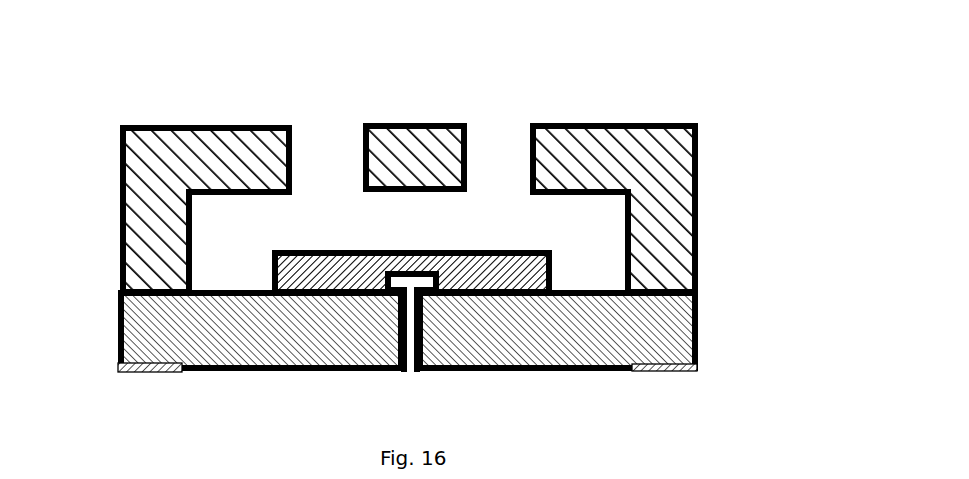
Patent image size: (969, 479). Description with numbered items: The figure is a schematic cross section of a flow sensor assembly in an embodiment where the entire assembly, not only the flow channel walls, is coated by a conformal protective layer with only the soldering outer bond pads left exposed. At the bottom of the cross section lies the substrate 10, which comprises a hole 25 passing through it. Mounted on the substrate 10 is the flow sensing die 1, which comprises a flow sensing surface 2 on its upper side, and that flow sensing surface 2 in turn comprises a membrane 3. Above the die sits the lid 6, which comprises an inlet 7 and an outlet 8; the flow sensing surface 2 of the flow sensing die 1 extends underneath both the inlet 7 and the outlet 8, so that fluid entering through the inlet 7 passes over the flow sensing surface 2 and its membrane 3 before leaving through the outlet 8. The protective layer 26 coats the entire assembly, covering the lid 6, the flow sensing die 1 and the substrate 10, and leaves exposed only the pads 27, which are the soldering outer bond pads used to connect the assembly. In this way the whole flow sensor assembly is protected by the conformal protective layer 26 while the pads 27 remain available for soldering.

The flow sensing die 1 is at (335, 273).
The flow sensing surface 2 is at (332, 250).
The membrane 3 is at (408, 250).
The lid 6 is at (150, 198).
The inlet 7 is at (322, 132).
The outlet 8 is at (495, 152).
The substrate 10 is at (575, 342).
The hole 25 is at (405, 368).
The protective layer 26 is at (552, 253).
The pads 27 is at (135, 373).